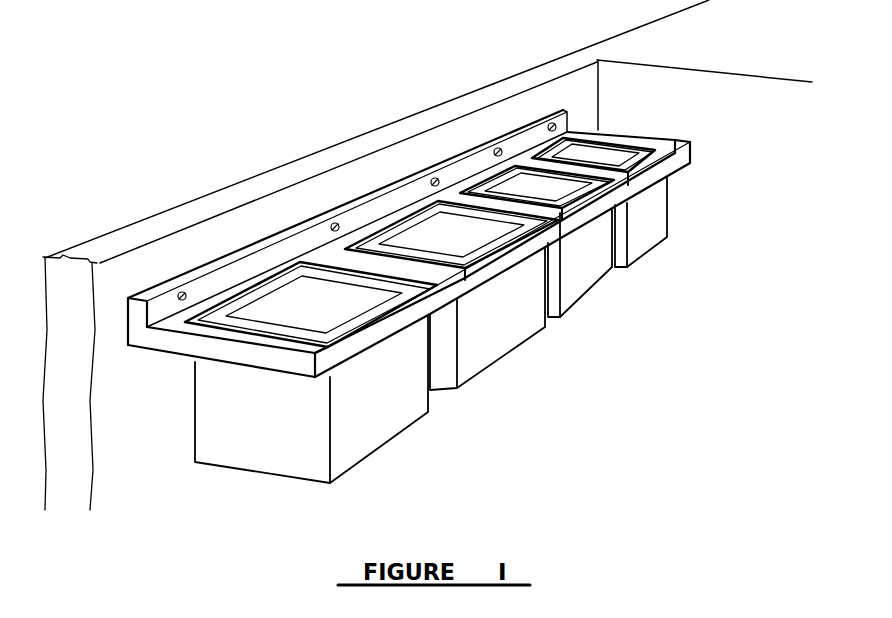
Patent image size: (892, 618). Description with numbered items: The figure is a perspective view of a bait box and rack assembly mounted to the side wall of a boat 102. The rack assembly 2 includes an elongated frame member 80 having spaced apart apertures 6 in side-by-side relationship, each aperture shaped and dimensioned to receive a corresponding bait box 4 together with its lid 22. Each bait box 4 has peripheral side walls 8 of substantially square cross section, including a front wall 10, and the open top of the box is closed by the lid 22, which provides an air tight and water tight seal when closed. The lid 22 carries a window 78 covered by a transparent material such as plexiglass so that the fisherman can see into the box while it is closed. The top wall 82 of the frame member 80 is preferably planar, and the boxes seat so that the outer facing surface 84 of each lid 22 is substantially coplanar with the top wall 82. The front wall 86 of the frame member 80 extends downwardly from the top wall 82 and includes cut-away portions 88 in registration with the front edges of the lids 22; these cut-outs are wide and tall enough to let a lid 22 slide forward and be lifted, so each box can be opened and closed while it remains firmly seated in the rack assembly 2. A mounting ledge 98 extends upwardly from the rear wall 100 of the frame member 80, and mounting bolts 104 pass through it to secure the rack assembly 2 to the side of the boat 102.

The rack assembly 2 is at (478, 254).
The bait box 4 is at (573, 283).
The aperture 6 is at (371, 214).
The peripheral side walls 8 is at (575, 387).
The front wall 10 is at (385, 418).
The lid 22 is at (671, 190).
The window 78 is at (408, 182).
The frame member 80 is at (654, 199).
The top wall 82 is at (451, 166).
The outer facing surface 84 is at (524, 135).
The front wall 86 is at (675, 246).
The cut-away portions 88 is at (395, 325).
The mounting ledge 98 is at (347, 227).
The rear wall 100 is at (376, 255).
The boat 102 is at (667, 47).
The mounting bolts 104 is at (367, 166).